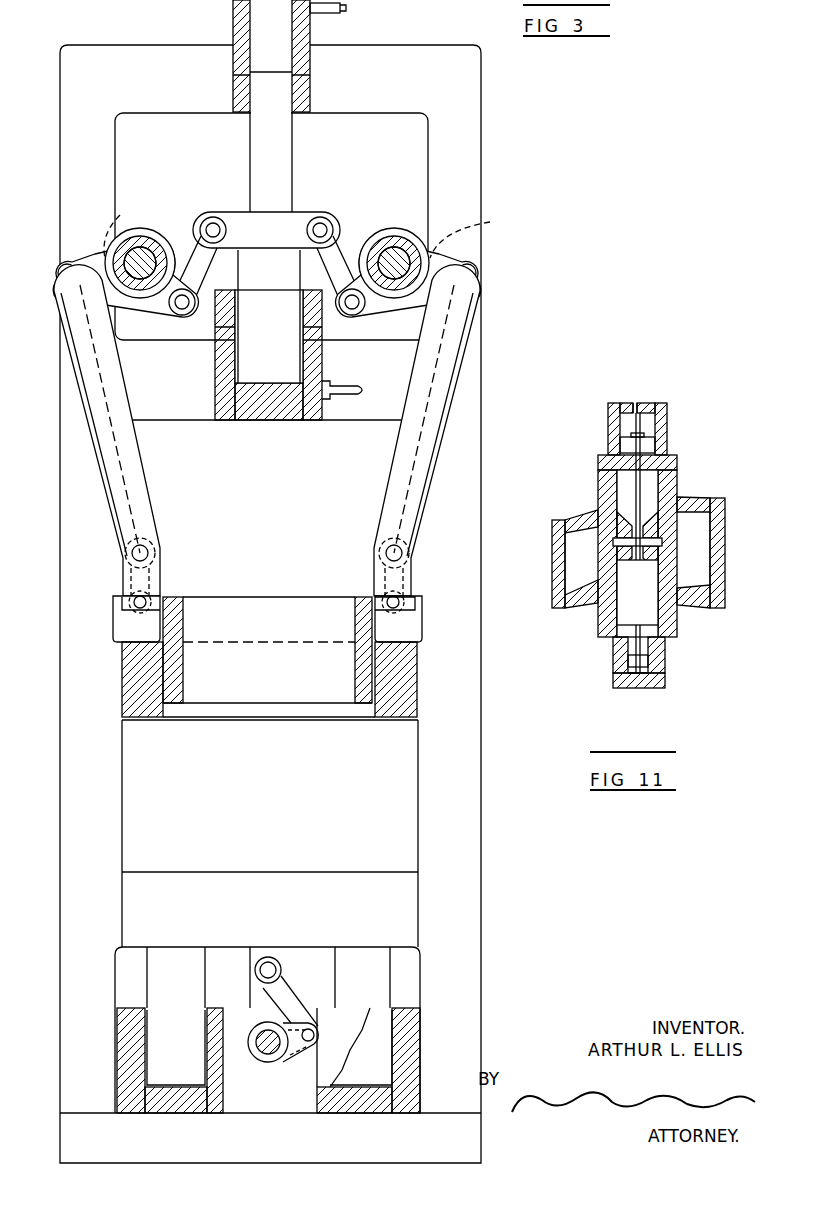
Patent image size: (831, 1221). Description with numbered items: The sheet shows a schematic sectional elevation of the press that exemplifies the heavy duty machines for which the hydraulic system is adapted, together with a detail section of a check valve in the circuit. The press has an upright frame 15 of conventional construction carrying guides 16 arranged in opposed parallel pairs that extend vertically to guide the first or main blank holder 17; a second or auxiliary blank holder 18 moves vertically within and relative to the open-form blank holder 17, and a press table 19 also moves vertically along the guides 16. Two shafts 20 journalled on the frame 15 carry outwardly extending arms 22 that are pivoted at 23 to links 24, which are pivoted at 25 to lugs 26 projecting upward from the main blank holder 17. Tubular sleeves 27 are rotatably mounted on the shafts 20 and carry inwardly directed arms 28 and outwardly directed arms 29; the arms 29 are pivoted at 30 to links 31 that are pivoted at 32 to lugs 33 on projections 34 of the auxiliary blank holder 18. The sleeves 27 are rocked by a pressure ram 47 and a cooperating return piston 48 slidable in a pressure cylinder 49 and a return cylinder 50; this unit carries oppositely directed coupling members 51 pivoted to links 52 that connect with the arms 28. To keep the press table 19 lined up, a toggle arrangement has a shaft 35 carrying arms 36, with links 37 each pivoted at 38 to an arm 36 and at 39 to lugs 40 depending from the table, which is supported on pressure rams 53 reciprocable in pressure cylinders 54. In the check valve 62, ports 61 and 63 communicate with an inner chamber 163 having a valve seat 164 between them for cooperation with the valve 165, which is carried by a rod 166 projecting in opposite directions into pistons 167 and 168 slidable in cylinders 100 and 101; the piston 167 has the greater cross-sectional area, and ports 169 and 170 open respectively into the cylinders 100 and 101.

In FIG. 3, the upright frame 15 is at (473, 768).
In FIG. 3, the guides 16 is at (122, 818).
In FIG. 3, the main blank holder 17 is at (122, 710).
In FIG. 3, the auxiliary blank holder 18 is at (180, 672).
In FIG. 3, the press table 19 is at (270, 896).
In FIG. 3, the shafts 20 is at (142, 258).
In FIG. 3, the arms 22 is at (78, 250).
In FIG. 3, the pivot connection 23 is at (58, 270).
In FIG. 3, the links 24 is at (80, 370).
In FIG. 3, the pivot connection 25 is at (130, 602).
In FIG. 3, the lugs 26 is at (398, 627).
In FIG. 3, the tubular sleeves 27 is at (405, 233).
In FIG. 3, the inwardly directed arms 28 is at (176, 308).
In FIG. 3, the outwardly directed arms 29 is at (314, 225).
In FIG. 3, the pivot connection 30 is at (462, 285).
In FIG. 3, the links 31 is at (440, 378).
In FIG. 3, the pivot connection 32 is at (386, 550).
In FIG. 3, the lugs 33 is at (392, 578).
In FIG. 3, the projections 34 is at (416, 610).
In FIG. 3, the shaft 35 is at (268, 1060).
In FIG. 3, the arms 36 is at (298, 1055).
In FIG. 3, the links 37 is at (286, 1000).
In FIG. 3, the pivot connection 38 is at (314, 1034).
In FIG. 3, the pivot connection 39 is at (255, 970).
In FIG. 3, the lugs 40 is at (280, 962).
In FIG. 3, the pressure ram 47 is at (269, 336).
In FIG. 3, the return piston 48 is at (280, 165).
In FIG. 3, the pressure cylinder 49 is at (218, 350).
In FIG. 3, the return cylinder 50 is at (310, 57).
In FIG. 3, the coupling members 51 is at (266, 230).
In FIG. 3, the links 52 is at (220, 263).
In FIG. 3, the pressure rams 53 is at (269, 1023).
In FIG. 3, the pressure cylinders 54 is at (323, 1103).
In FIG. 11, the port 61 is at (565, 563).
In FIG. 11, the check valve 62 is at (677, 482).
In FIG. 11, the port 63 is at (710, 568).
In FIG. 11, the cylinder 100 is at (667, 422).
In FIG. 11, the cylinder 101 is at (628, 668).
In FIG. 11, the inner chamber 163 is at (622, 618).
In FIG. 11, the valve seat 164 is at (612, 540).
In FIG. 11, the valve 165 is at (648, 530).
In FIG. 11, the rod 166 is at (634, 490).
In FIG. 11, the piston 167 is at (650, 445).
In FIG. 11, the piston 168 is at (648, 661).
In FIG. 11, the port 169 is at (636, 402).
In FIG. 11, the port 170 is at (660, 682).